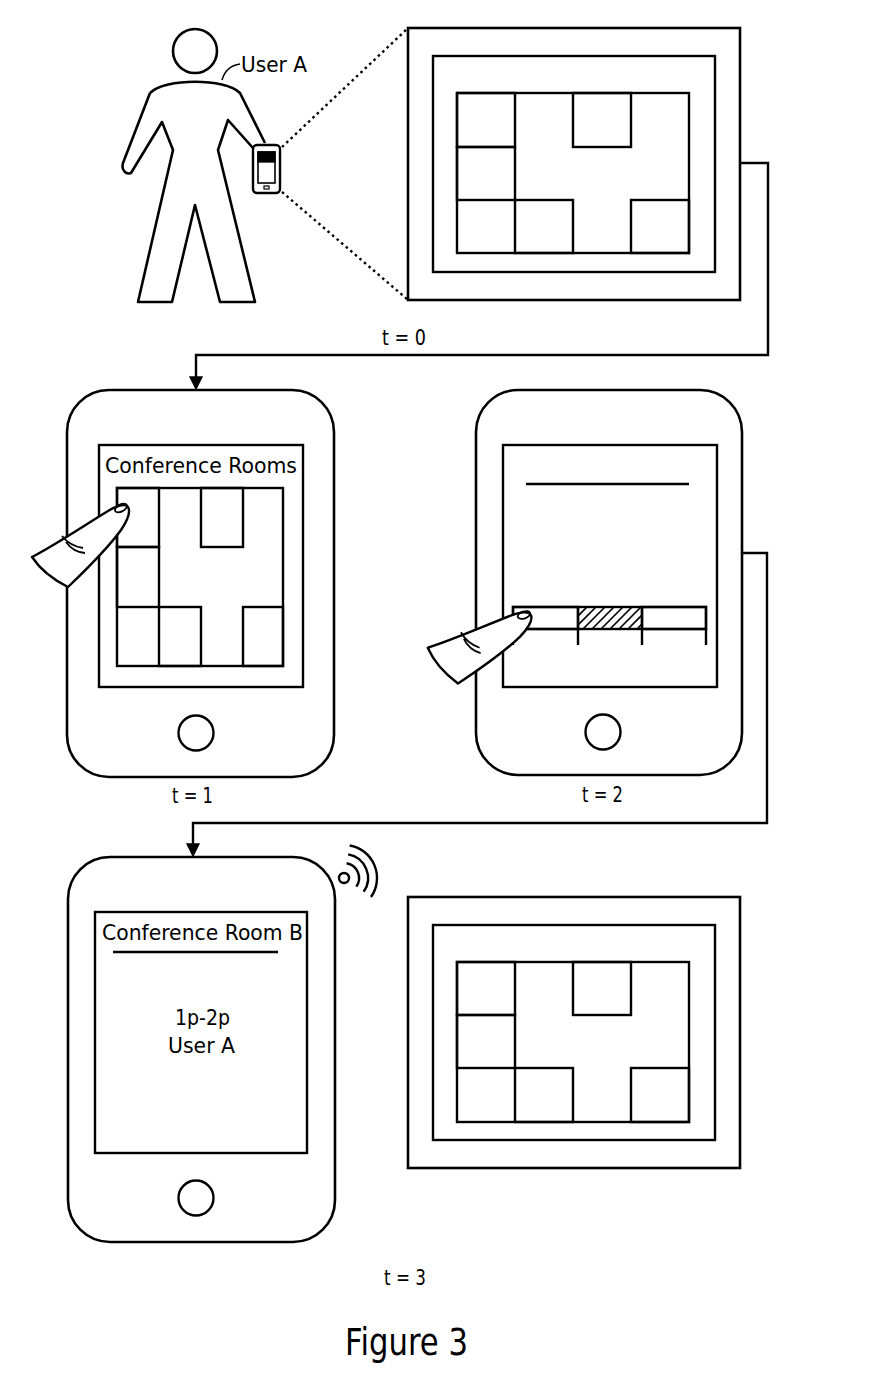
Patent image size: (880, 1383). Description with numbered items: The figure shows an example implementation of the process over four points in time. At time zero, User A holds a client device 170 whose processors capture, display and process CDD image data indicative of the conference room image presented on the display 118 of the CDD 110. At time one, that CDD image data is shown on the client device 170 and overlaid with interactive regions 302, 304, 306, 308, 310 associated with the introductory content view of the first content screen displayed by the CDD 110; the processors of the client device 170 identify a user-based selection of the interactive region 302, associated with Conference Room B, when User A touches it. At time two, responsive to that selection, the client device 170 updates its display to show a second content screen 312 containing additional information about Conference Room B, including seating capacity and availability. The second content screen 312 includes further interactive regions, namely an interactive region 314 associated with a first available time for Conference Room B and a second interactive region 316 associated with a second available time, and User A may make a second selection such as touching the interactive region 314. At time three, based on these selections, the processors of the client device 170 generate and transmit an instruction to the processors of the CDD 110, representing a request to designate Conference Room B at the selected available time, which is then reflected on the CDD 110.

The CDD 110 is at (690, 28).
The display 118 is at (707, 97).
The client device 170 is at (269, 144).
The interactive region 302 is at (177, 515).
The interactive region 304 is at (163, 572).
The interactive region 306 is at (243, 614).
The interactive region 308 is at (262, 515).
The interactive region 310 is at (221, 645).
The second content screen 312 is at (703, 487).
The interactive region 314 is at (551, 605).
The second interactive region 316 is at (677, 605).